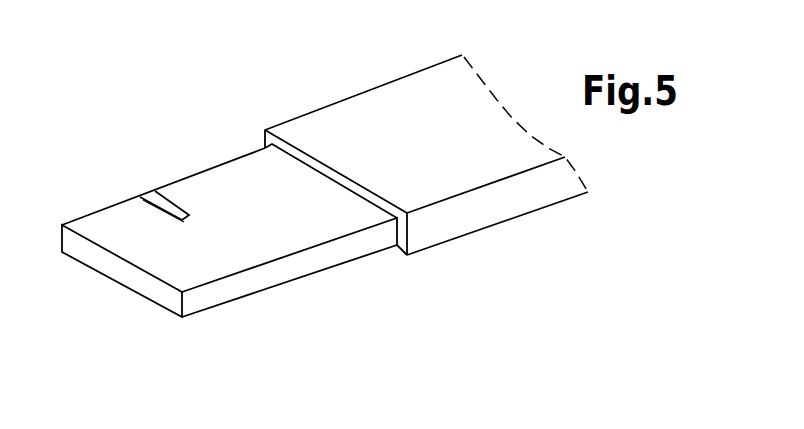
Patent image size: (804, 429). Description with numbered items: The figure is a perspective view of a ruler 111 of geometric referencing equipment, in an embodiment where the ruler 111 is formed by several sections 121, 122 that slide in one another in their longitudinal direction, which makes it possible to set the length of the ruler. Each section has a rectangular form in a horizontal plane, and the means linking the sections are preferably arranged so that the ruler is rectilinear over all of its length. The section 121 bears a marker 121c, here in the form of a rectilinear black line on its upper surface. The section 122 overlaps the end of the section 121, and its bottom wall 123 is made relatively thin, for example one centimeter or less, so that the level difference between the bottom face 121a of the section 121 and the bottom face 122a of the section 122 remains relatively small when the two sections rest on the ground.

The ruler 111 is at (276, 111).
The section 121 is at (245, 283).
The bottom face 121a is at (197, 313).
The marker 121c is at (178, 210).
The section 122 is at (518, 195).
The bottom face 122a is at (447, 242).
The bottom wall 123 is at (393, 231).